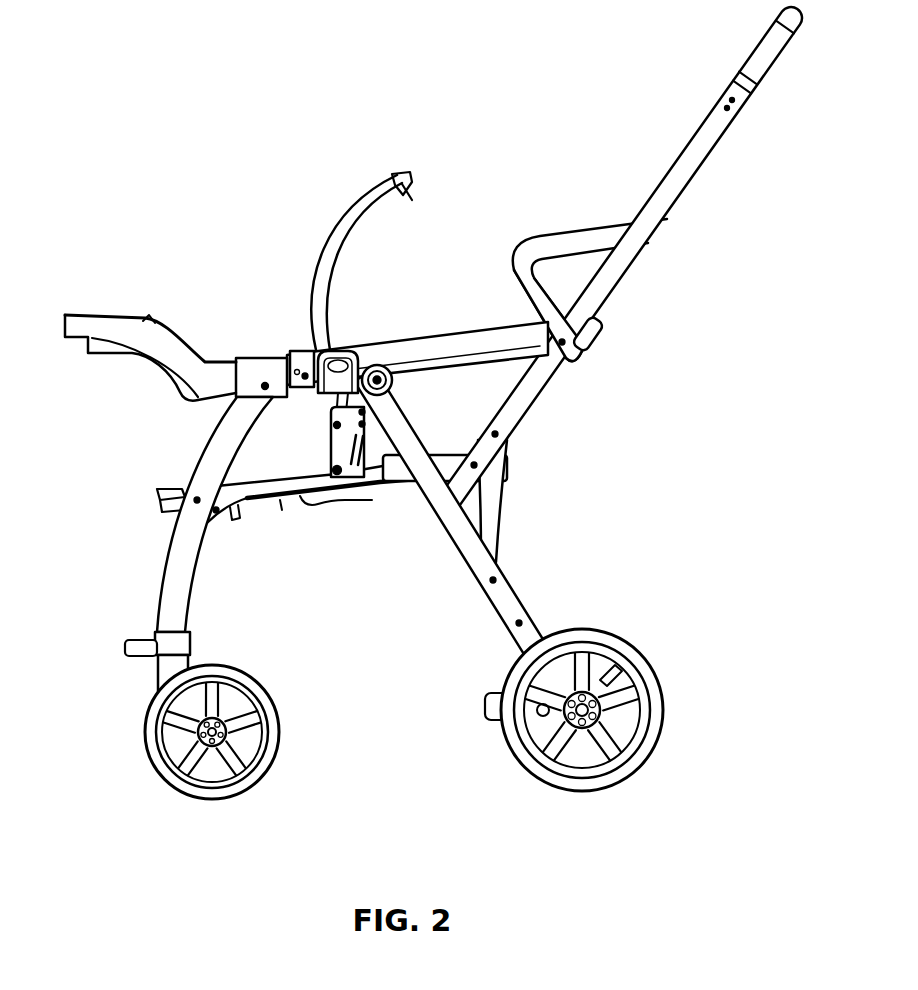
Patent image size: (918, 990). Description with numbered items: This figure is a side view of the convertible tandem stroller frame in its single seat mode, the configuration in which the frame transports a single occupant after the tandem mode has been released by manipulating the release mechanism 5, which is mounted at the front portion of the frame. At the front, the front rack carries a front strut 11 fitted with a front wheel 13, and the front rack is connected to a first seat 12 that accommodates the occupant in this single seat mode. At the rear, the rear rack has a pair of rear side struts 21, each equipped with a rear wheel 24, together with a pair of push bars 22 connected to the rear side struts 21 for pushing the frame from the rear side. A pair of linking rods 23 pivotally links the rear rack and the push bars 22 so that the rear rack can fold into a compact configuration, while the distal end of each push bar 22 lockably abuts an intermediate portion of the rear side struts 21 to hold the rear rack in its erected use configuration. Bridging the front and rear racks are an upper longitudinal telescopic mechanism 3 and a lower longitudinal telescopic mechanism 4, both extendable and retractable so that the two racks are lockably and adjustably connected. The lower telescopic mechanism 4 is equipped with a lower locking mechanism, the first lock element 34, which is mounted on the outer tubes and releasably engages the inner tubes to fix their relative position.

The upper longitudinal telescopic mechanism 3 is at (470, 345).
The lower longitudinal telescopic mechanism 4 is at (285, 484).
The release mechanism 5 is at (170, 513).
The front strut 11 is at (175, 597).
The first seat 12 is at (247, 484).
The front wheel 13 is at (152, 757).
The rear side strut 21 is at (513, 607).
The push bar 22 is at (690, 172).
The linking rod 23 is at (493, 515).
The rear wheel 24 is at (662, 687).
The first lock element 34 is at (337, 396).